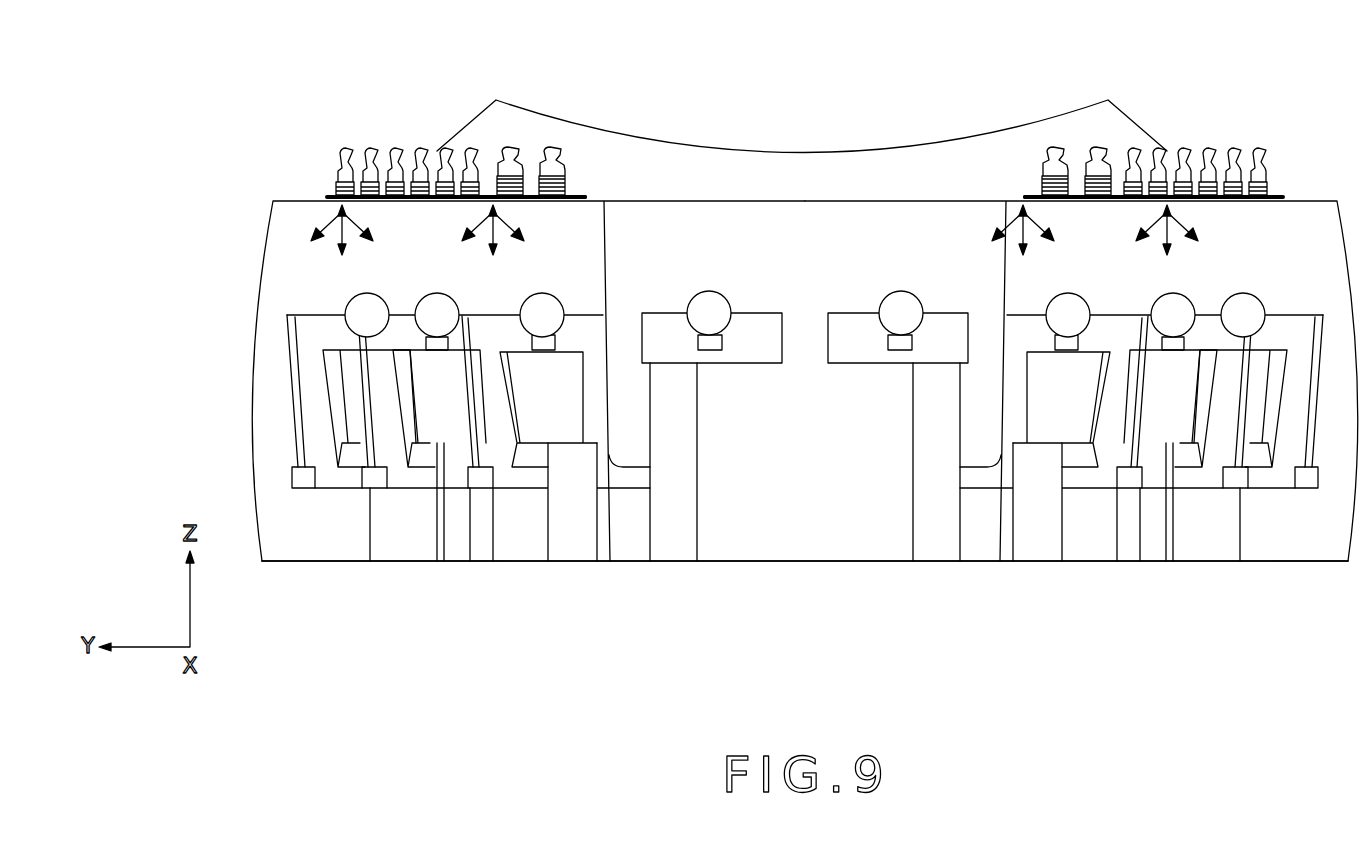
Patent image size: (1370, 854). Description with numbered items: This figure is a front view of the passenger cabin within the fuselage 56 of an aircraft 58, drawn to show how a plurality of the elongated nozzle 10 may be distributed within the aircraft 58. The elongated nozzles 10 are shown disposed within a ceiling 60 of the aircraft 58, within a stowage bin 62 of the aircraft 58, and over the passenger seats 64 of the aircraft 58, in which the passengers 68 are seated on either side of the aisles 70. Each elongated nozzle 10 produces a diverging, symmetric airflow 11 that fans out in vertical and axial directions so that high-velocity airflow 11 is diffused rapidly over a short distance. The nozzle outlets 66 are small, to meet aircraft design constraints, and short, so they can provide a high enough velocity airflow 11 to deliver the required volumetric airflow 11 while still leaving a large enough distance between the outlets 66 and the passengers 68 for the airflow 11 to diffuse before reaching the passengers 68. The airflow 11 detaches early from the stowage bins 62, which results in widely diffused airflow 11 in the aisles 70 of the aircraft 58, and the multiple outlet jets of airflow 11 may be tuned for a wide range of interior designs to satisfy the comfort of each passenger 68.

The elongated nozzle 10 is at (440, 160).
The airflow 11 is at (348, 237).
The fuselage 56 is at (273, 248).
The aircraft 58 is at (1162, 675).
The ceiling 60 is at (518, 200).
The stowage bin 62 is at (500, 133).
The passenger seat 64 is at (350, 473).
The nozzle outlet 66 is at (422, 202).
The passenger 68 is at (535, 433).
The aisle 70 is at (798, 440).